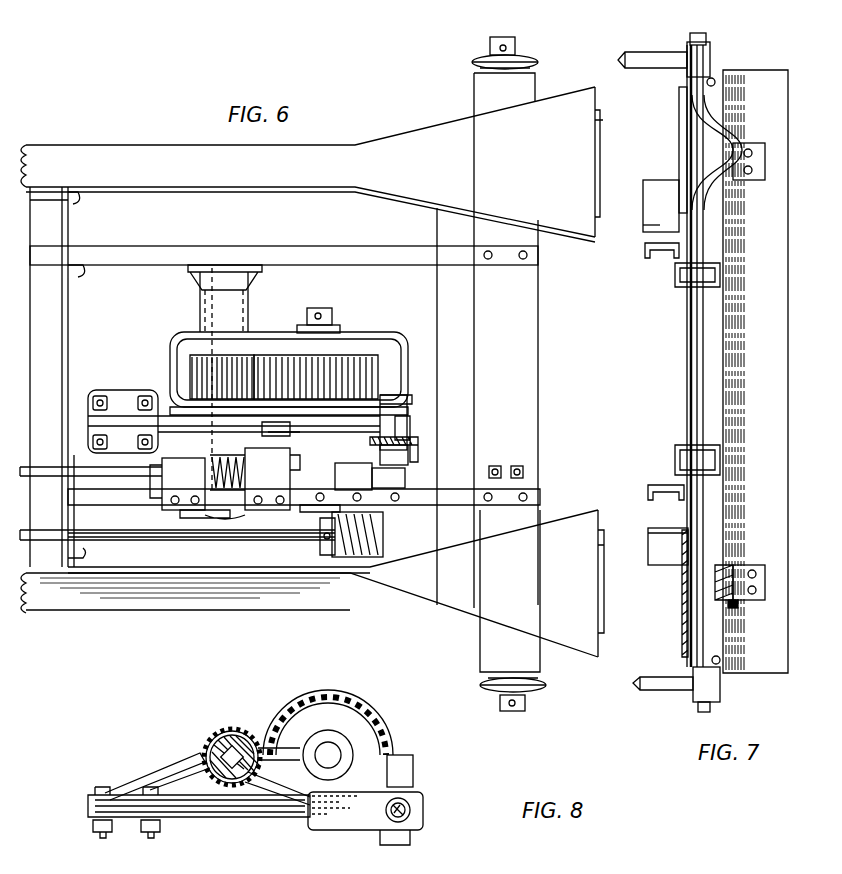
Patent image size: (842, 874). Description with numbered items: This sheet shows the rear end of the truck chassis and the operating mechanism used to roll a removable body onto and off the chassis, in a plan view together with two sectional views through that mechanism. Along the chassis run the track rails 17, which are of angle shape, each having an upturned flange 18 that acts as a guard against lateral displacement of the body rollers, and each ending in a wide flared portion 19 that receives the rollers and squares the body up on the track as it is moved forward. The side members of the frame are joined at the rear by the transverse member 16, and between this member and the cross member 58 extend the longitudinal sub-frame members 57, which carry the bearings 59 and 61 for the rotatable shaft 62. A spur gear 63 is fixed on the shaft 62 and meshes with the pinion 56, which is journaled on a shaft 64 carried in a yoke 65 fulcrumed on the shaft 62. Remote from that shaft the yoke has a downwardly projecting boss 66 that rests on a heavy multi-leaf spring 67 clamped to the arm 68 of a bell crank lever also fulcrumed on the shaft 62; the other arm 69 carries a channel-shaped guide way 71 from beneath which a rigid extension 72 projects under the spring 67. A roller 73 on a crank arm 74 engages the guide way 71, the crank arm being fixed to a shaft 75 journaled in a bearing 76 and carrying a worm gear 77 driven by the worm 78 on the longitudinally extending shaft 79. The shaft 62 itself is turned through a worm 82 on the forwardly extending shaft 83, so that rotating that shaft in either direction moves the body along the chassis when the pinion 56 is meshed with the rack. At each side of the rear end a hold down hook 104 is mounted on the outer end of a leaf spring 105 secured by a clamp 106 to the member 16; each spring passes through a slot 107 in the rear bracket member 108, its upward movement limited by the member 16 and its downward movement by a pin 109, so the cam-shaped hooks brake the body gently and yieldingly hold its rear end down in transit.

In FIG. 6, the transverse member 16 is at (485, 225).
In FIG. 7, the transverse member 16 is at (688, 300).
In FIG. 6, the rails 17 is at (328, 152).
In FIG. 6, the upturned flange 18 is at (255, 180).
In FIG. 7, the upturned flange 18 is at (648, 222).
In FIG. 6, the flared portion 19 is at (552, 115).
In FIG. 7, the flared portion 19 is at (679, 98).
In FIG. 6, the pinion 56 is at (355, 360).
In FIG. 8, the pinion 56 is at (378, 720).
In FIG. 6, the sub-frame members 57 is at (122, 262).
In FIG. 7, the sub-frame members 57 is at (645, 250).
In FIG. 6, the cross member 58 is at (68, 316).
In FIG. 6, the bearing 59 is at (186, 272).
In FIG. 6, the bearing 61 is at (185, 506).
In FIG. 6, the rotatable shaft 62 is at (210, 315).
In FIG. 8, the rotatable shaft 62 is at (220, 745).
In FIG. 6, the spur gear 63 is at (192, 367).
In FIG. 8, the spur gear 63 is at (232, 728).
In FIG. 6, the shaft 64 is at (328, 312).
In FIG. 8, the shaft 64 is at (322, 748).
In FIG. 6, the yoke 65 is at (262, 336).
In FIG. 8, the yoke 65 is at (270, 740).
In FIG. 6, the boss or bearing portion 66 is at (408, 420).
In FIG. 8, the boss or bearing portion 66 is at (410, 790).
In FIG. 6, the multi-leaf spring 67 is at (170, 430).
In FIG. 8, the multi-leaf spring 67 is at (225, 812).
In FIG. 6, the arm 68 is at (122, 426).
In FIG. 8, the arm 68 is at (160, 775).
In FIG. 6, the arm 69 is at (281, 423).
In FIG. 8, the arm 69 is at (292, 778).
In FIG. 6, the channel-shaped guide way 71 is at (418, 441).
In FIG. 8, the channel-shaped guide way 71 is at (420, 805).
In FIG. 6, the arm or extension 72 is at (400, 398).
In FIG. 8, the arm or extension 72 is at (410, 838).
In FIG. 6, the roller 73 is at (408, 458).
In FIG. 8, the roller 73 is at (412, 812).
In FIG. 6, the crank arm 74 is at (405, 484).
In FIG. 6, the shaft 75 is at (342, 470).
In FIG. 6, the bearing 76 is at (330, 505).
In FIG. 6, the worm gear 77 is at (318, 540).
In FIG. 6, the worm 78 is at (380, 556).
In FIG. 6, the longitudinally extending shaft 79 is at (95, 545).
In FIG. 6, the worm 82 is at (238, 470).
In FIG. 6, the forwardly extending shaft 83 is at (54, 478).
In FIG. 6, the hold down hook 104 is at (520, 58).
In FIG. 7, the hold down hook 104 is at (660, 56).
In FIG. 6, the leaf spring 105 is at (525, 725).
In FIG. 7, the leaf spring 105 is at (700, 222).
In FIG. 7, the clamp 106 is at (720, 275).
In FIG. 7, the slot 107 is at (750, 610).
In FIG. 6, the rear bracket member 108 is at (598, 120).
In FIG. 7, the rear bracket member 108 is at (705, 140).
In FIG. 7, the pin 109 is at (716, 82).